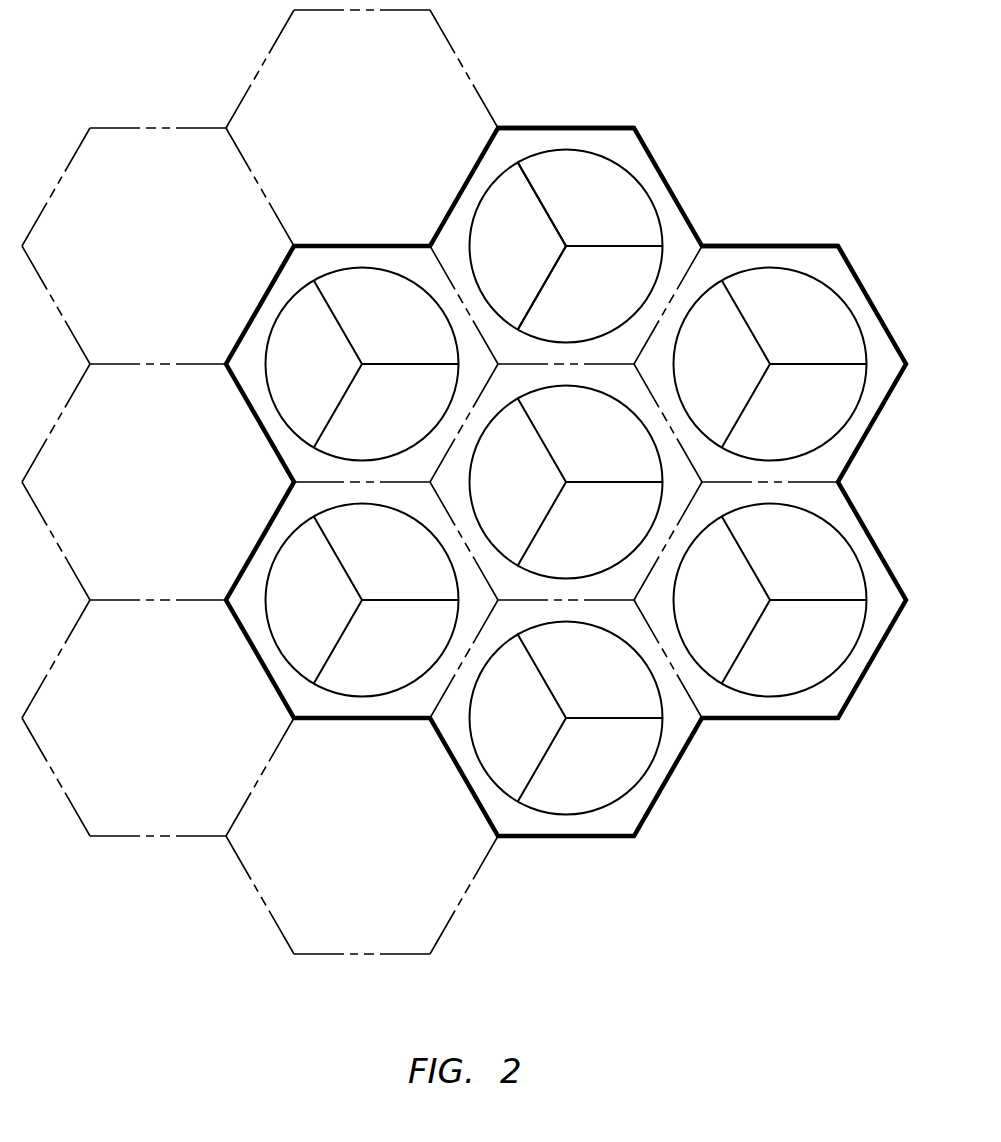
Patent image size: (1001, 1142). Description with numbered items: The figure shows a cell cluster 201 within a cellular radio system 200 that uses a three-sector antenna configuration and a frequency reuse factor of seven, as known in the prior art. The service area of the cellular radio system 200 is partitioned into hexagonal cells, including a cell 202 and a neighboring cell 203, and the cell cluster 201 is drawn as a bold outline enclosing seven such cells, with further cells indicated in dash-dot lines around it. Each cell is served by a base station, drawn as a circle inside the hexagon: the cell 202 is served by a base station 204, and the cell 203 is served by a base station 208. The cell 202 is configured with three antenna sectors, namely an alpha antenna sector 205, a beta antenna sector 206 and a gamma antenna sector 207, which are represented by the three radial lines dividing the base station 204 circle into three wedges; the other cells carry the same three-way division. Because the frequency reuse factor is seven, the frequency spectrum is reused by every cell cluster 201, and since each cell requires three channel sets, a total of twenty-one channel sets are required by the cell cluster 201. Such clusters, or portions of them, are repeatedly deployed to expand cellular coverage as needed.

The cellular radio system 200 is at (467, 514).
The cell cluster 201 is at (706, 729).
The cell 202 is at (584, 134).
The cell 203 is at (789, 252).
The base station 204 is at (628, 169).
The alpha antenna sector 205 is at (607, 217).
The beta antenna sector 206 is at (607, 302).
The gamma antenna sector 207 is at (535, 259).
The base station 208 is at (833, 287).